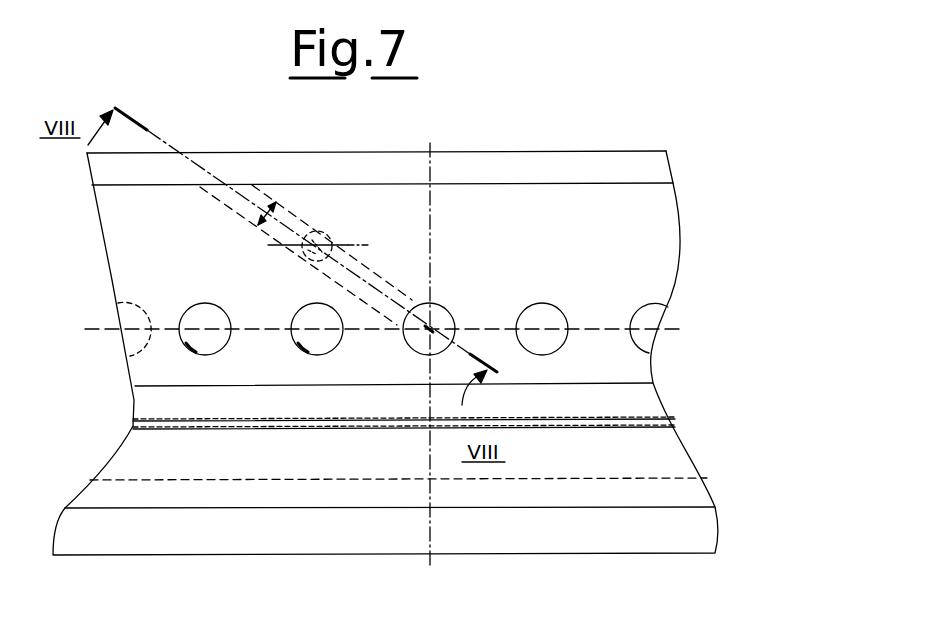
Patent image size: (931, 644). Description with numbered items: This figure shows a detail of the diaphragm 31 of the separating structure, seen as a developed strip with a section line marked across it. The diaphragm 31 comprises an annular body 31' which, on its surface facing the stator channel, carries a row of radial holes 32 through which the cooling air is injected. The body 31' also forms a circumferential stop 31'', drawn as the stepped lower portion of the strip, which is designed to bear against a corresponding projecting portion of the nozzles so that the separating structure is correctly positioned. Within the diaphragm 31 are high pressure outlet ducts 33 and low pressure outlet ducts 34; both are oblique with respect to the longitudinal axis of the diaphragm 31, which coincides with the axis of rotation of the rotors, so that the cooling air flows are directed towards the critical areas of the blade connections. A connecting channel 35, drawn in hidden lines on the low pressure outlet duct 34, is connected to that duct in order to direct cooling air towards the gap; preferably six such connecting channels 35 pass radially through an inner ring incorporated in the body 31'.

The diaphragm 31 is at (385, 318).
The annular body 31' is at (423, 284).
The circumferential stop 31'' is at (390, 509).
The radial holes 32 is at (202, 312).
The high pressure outlet ducts 33 is at (194, 347).
The low pressure outlet ducts 34 is at (363, 270).
The connecting channel 35 is at (323, 232).